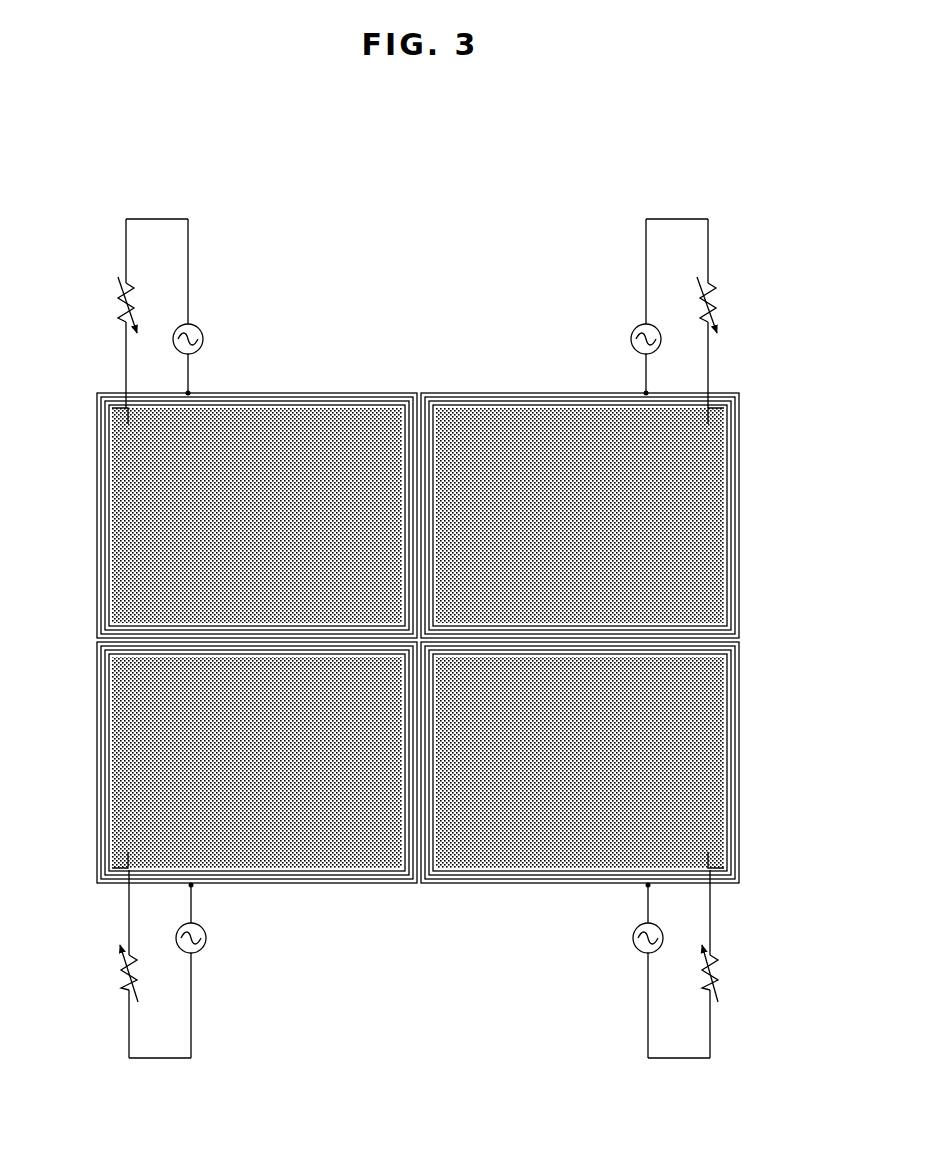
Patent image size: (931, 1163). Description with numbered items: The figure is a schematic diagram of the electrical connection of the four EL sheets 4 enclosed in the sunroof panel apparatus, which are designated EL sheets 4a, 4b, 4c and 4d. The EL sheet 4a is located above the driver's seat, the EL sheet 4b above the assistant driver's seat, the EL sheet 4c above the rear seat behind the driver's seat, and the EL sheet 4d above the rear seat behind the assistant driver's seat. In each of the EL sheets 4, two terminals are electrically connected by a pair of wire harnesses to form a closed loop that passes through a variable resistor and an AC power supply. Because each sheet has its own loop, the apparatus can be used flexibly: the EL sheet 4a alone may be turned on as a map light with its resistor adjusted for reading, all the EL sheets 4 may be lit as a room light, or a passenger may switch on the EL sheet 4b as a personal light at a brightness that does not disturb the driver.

The EL sheet 4 is at (418, 639).
The EL sheet 4a is at (495, 852).
The EL sheet 4b is at (493, 427).
The EL sheet 4c is at (347, 852).
The EL sheet 4d is at (345, 427).